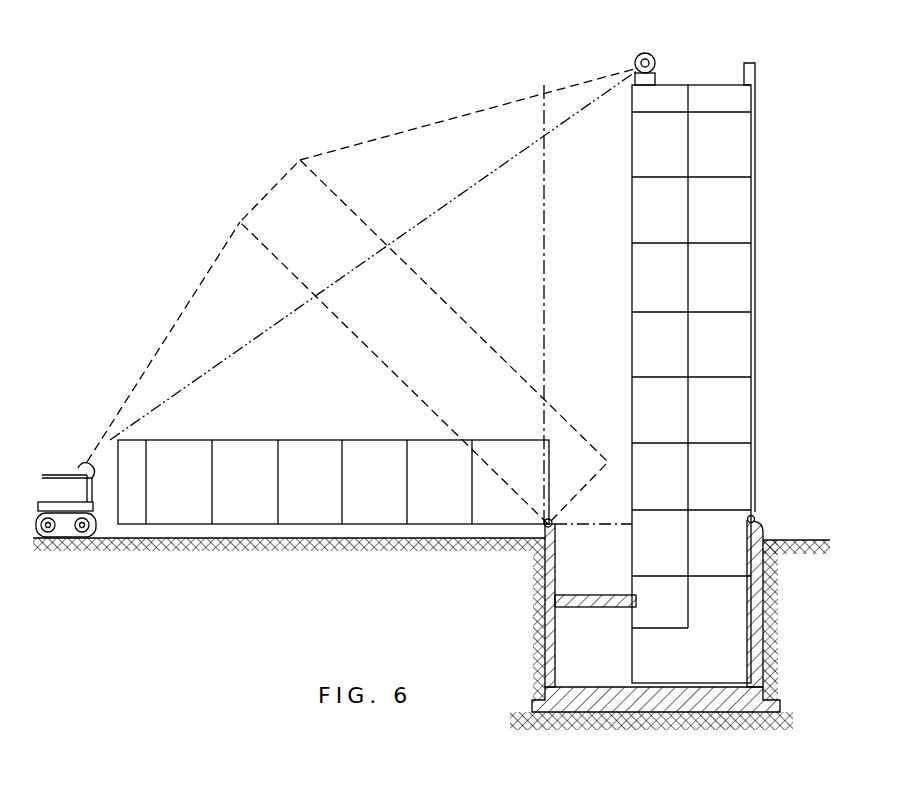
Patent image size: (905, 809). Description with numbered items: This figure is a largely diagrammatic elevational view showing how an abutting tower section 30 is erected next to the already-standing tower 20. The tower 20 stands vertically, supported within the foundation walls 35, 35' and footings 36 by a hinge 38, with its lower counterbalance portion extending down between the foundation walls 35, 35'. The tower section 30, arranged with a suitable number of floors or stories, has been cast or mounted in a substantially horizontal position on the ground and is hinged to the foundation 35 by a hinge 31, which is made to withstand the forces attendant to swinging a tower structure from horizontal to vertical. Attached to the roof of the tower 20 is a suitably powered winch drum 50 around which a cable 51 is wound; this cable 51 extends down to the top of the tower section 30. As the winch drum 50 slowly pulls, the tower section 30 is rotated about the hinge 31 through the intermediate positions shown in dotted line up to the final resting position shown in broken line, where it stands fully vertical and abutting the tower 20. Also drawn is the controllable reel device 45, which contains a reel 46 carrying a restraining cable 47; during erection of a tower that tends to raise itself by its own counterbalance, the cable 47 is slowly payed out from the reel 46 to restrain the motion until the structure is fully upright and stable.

The tower 20 is at (770, 354).
The tower section 30 is at (320, 430).
The hinge 31 is at (540, 531).
The foundation wall 35 is at (683, 603).
The foundation wall 35' is at (558, 630).
The footings 36 is at (703, 712).
The hinge 38 is at (762, 517).
The controllable reel device 45 is at (55, 455).
The reel 46 is at (82, 462).
The cable 47 is at (160, 337).
The winch drum 50 is at (657, 55).
The cable 51 is at (418, 218).